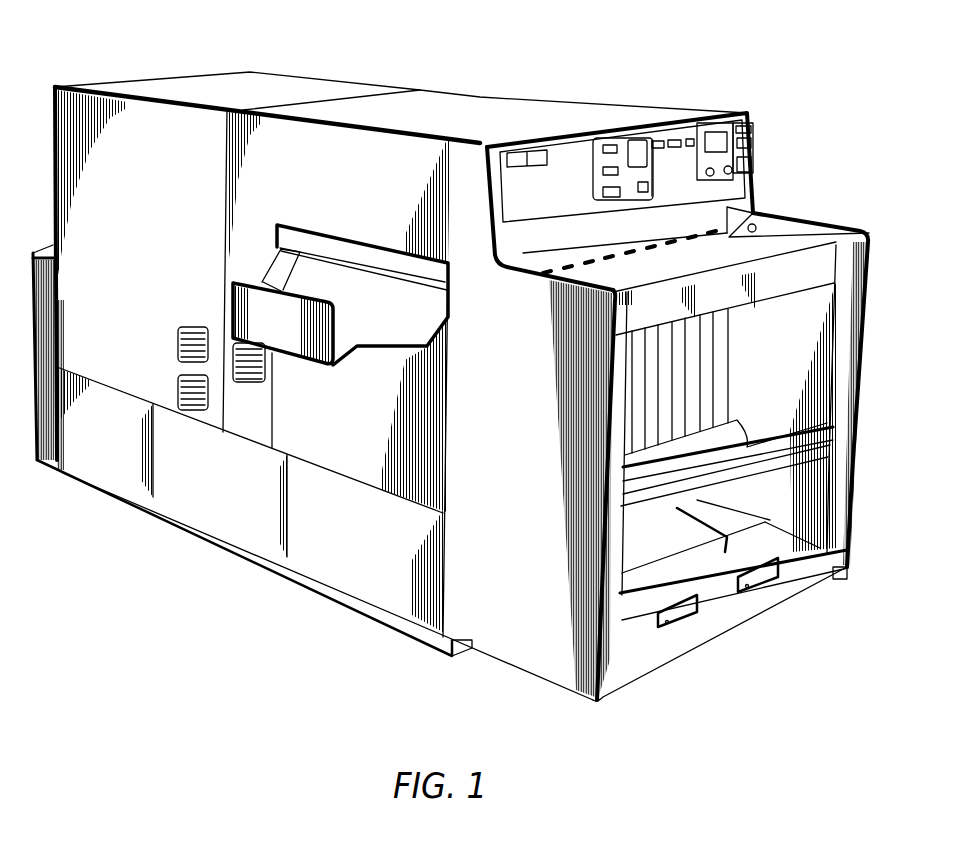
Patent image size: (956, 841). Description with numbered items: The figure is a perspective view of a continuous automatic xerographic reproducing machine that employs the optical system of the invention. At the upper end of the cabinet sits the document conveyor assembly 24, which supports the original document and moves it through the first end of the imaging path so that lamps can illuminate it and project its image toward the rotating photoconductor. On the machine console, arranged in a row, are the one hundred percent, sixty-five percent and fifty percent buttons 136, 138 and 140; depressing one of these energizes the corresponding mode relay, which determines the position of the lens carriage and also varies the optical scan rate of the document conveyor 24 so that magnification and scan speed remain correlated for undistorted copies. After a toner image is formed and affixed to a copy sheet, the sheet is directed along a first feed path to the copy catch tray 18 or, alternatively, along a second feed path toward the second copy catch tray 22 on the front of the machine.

The copy catch tray 18 is at (780, 567).
The second copy catch tray 22 is at (345, 345).
The document conveyor assembly 24 is at (643, 155).
The 100 percent button 136 is at (667, 140).
The 65 percent button 138 is at (678, 142).
The 50 percent button 140 is at (688, 142).